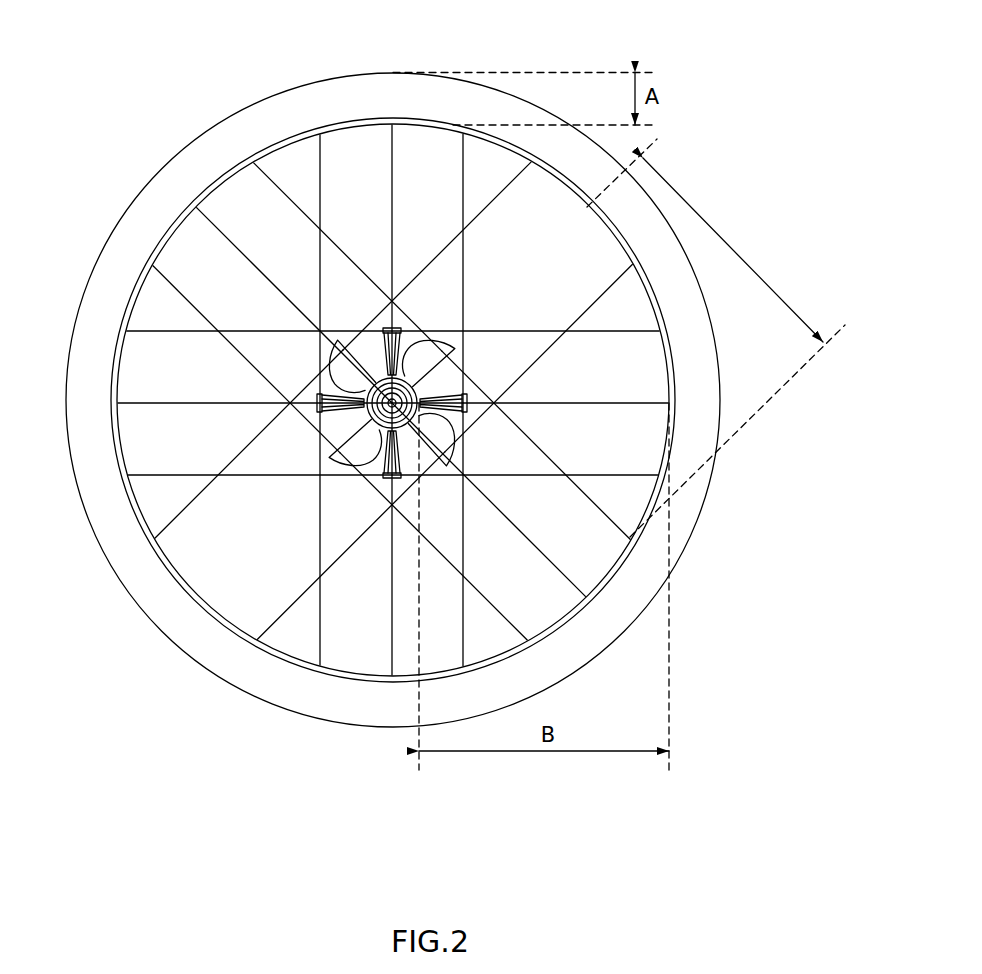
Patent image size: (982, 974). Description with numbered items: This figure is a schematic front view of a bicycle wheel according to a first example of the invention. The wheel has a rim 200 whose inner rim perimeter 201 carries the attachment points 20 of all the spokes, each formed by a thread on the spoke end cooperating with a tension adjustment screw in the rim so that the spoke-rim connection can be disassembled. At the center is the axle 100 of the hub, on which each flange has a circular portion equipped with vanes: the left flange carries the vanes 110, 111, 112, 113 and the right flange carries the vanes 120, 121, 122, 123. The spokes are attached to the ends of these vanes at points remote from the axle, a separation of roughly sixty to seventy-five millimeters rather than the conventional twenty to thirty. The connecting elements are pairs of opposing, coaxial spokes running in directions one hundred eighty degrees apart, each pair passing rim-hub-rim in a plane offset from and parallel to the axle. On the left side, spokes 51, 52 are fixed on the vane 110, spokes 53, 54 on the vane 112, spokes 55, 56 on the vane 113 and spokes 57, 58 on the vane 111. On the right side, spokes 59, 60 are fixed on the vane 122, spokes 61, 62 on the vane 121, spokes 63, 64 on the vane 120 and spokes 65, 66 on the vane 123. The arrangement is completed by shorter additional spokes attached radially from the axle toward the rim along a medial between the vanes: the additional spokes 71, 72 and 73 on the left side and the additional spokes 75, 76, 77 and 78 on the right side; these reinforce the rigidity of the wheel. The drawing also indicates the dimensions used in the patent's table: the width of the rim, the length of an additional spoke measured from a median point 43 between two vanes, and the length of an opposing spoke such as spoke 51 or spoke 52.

The rim 200 is at (213, 140).
The inner rim perimeter 201 is at (233, 176).
The attachment point 20 is at (662, 328).
The spoke 51 is at (278, 183).
The spoke 52 is at (630, 535).
The spoke 53 is at (165, 270).
The spoke 54 is at (555, 620).
The spoke 55 is at (160, 558).
The spoke 56 is at (522, 162).
The spoke 57 is at (282, 622).
The spoke 58 is at (625, 270).
The spoke 59 is at (321, 598).
The spoke 60 is at (320, 197).
The spoke 61 is at (462, 185).
The spoke 62 is at (462, 655).
The spoke 63 is at (260, 329).
The spoke 64 is at (530, 328).
The spoke 65 is at (185, 476).
The spoke 66 is at (577, 476).
The additional spoke 71 is at (207, 216).
The additional spoke 72 is at (580, 580).
The additional spoke 73 is at (716, 338).
The additional spoke 75 is at (395, 127).
The additional spoke 76 is at (392, 655).
The additional spoke 77 is at (254, 402).
The additional spoke 78 is at (592, 401).
The median point 43 is at (345, 363).
The axle 100 is at (383, 428).
The vane 110 is at (433, 363).
The vane 111 is at (435, 433).
The vane 112 is at (347, 443).
The vane 113 is at (345, 366).
The vane 120 is at (415, 340).
The vane 121 is at (462, 382).
The vane 122 is at (428, 473).
The vane 123 is at (322, 390).